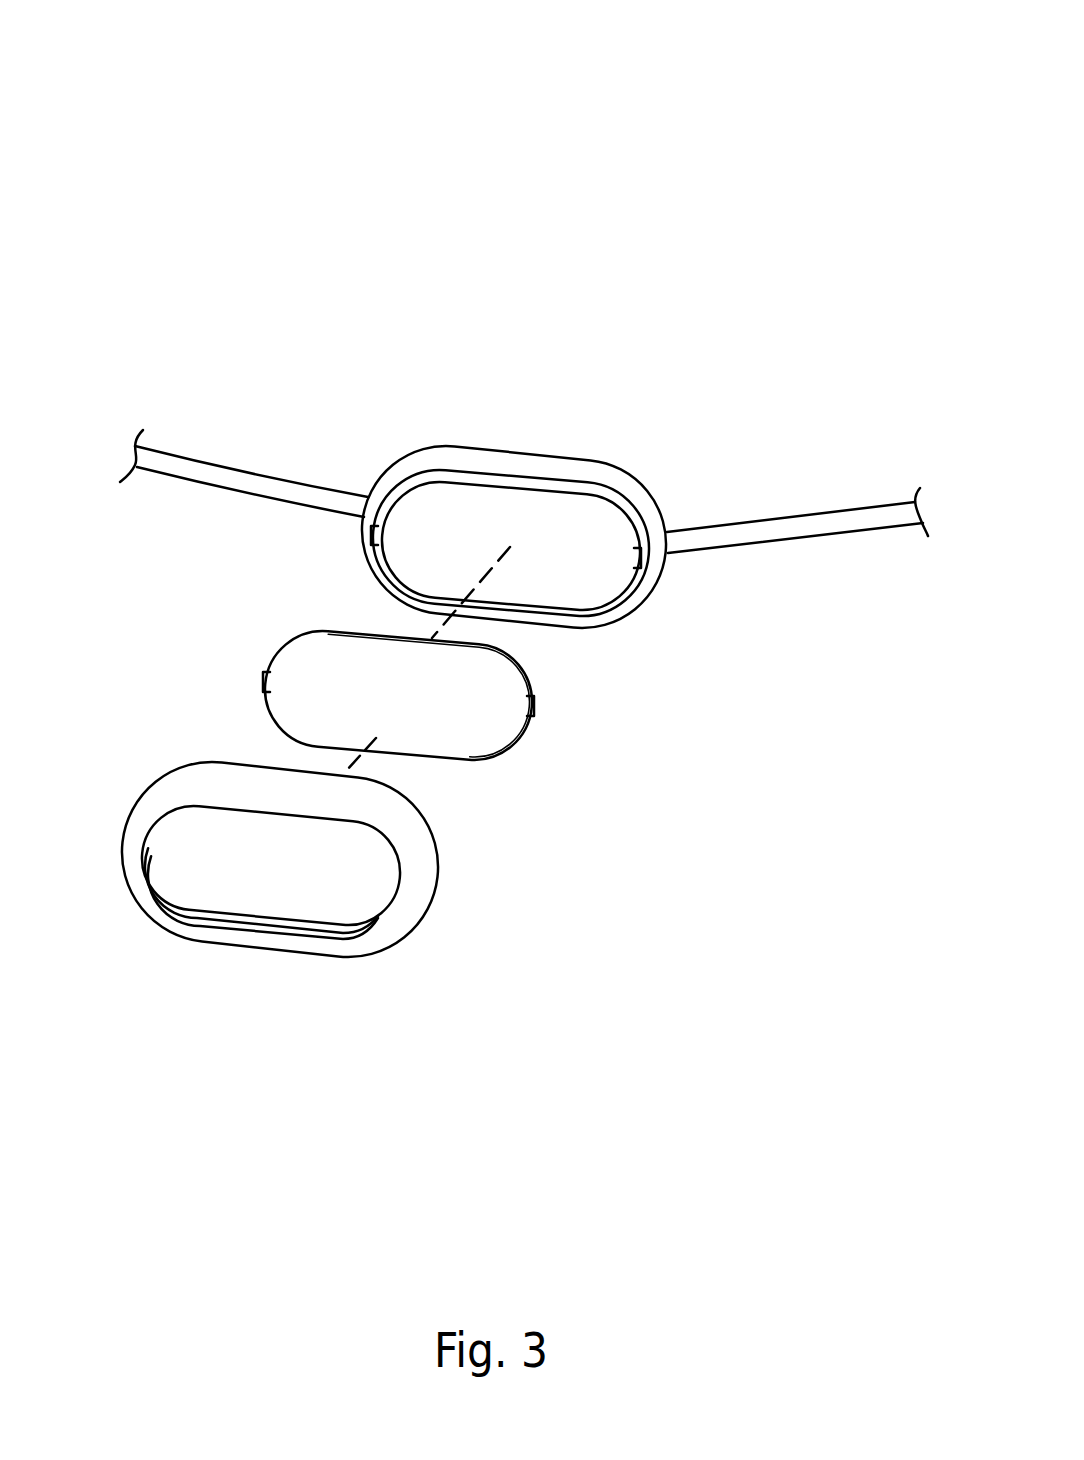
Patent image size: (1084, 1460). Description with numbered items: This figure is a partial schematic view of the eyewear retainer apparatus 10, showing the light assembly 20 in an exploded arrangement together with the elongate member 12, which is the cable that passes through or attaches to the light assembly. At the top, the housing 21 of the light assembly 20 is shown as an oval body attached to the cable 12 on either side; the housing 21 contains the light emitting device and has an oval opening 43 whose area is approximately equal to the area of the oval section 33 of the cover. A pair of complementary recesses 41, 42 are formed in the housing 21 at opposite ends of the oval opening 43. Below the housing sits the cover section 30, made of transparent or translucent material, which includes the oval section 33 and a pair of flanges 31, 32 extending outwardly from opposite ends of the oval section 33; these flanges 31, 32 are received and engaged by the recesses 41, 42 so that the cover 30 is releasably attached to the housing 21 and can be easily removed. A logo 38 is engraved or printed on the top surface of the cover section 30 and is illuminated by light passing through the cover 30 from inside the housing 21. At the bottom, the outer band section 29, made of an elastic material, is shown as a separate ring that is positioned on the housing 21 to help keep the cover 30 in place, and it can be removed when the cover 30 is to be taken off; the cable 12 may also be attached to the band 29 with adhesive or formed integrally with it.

The eyewear retainer apparatus 10 is at (162, 140).
The elongate member 12 is at (252, 472).
The light assembly 20 is at (380, 412).
The housing 21 is at (555, 465).
The outer band section 29 is at (258, 937).
The cover section 30 is at (427, 737).
The flange 31 is at (265, 682).
The flange 32 is at (533, 712).
The oval section 33 is at (390, 647).
The logo 38 is at (307, 702).
The recess 41 is at (367, 527).
The recess 42 is at (640, 558).
The oval opening 43 is at (470, 537).